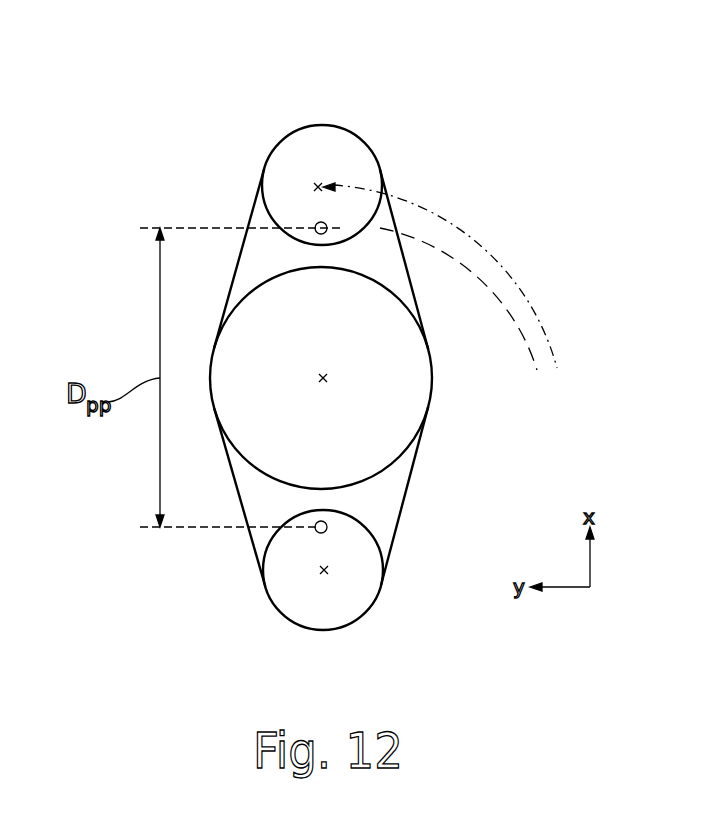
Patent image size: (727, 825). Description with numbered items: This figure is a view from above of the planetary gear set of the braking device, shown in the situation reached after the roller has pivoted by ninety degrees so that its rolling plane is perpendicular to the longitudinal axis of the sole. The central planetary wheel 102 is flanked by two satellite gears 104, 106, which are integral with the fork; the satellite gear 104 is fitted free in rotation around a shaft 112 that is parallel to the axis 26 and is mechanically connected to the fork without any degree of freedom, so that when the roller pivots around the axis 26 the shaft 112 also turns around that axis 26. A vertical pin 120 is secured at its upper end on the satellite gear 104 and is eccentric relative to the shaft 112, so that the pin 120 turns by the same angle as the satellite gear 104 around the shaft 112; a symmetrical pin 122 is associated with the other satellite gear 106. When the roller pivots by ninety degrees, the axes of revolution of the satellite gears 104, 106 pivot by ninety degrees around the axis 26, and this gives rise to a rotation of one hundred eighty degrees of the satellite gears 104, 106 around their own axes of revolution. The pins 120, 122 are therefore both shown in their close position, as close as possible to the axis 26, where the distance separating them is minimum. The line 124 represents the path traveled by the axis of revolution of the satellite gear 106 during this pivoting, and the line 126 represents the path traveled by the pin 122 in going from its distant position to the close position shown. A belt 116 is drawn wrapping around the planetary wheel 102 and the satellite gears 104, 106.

The planetary wheel 102 is at (420, 375).
The axis 26 is at (327, 378).
The satellite gear 106 is at (320, 155).
The satellite gear 104 is at (340, 610).
The belt 116 is at (402, 505).
The pin 122 is at (320, 223).
The pin 120 is at (320, 533).
The shaft 112 is at (324, 576).
The line 124 is at (447, 220).
The line 126 is at (487, 297).